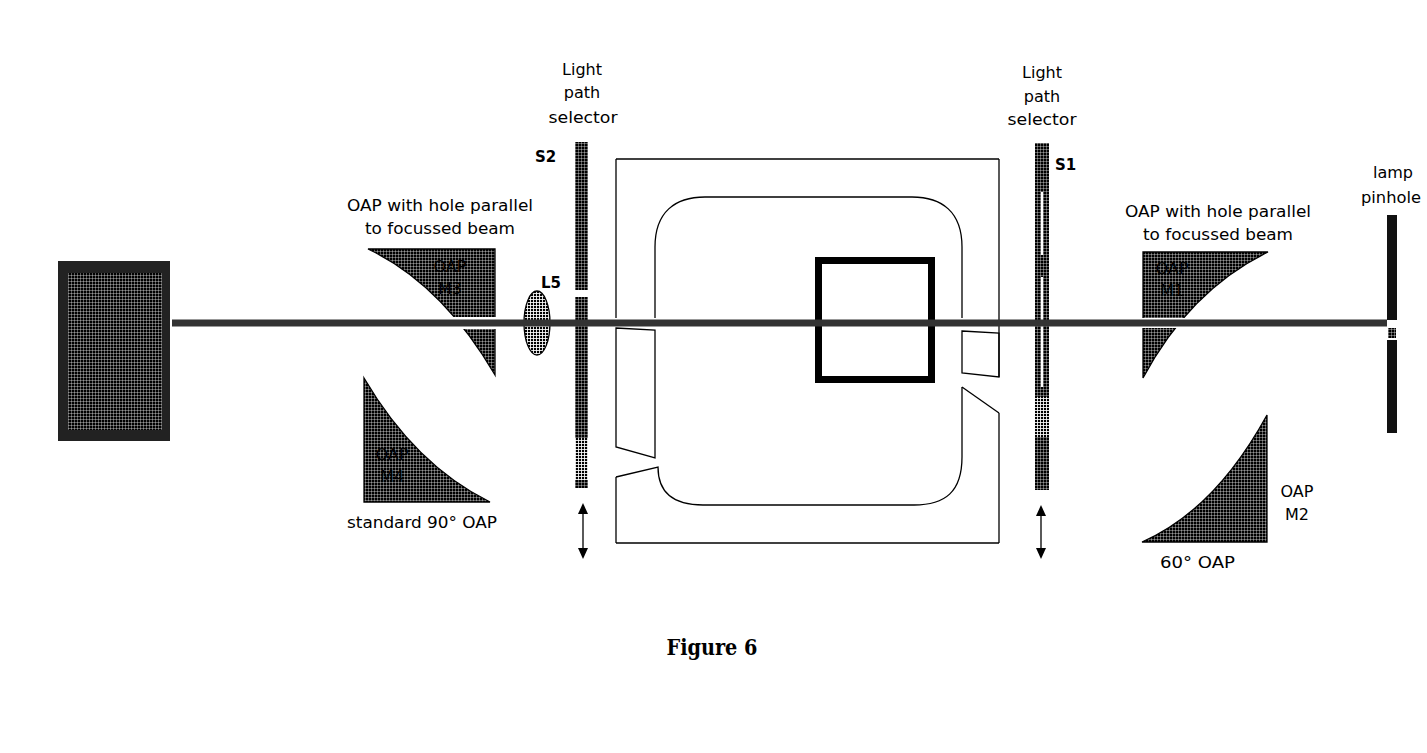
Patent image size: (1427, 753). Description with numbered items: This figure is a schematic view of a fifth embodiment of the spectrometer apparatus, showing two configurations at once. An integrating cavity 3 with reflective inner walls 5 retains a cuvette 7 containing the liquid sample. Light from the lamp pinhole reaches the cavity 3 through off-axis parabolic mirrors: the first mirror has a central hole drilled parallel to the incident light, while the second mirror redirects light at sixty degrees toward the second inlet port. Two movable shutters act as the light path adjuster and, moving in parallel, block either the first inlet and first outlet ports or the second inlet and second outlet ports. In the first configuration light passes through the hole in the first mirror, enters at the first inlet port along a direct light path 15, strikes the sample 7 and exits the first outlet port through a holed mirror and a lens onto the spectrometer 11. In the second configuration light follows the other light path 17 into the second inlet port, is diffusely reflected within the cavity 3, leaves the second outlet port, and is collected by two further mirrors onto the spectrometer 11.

The integrating cavity 3 is at (665, 162).
The reflective inner walls 5 is at (872, 197).
The cuvette 7 is at (902, 258).
The spectrometer 11 is at (116, 418).
The direct light path 15 is at (255, 322).
The light path 17 is at (290, 298).